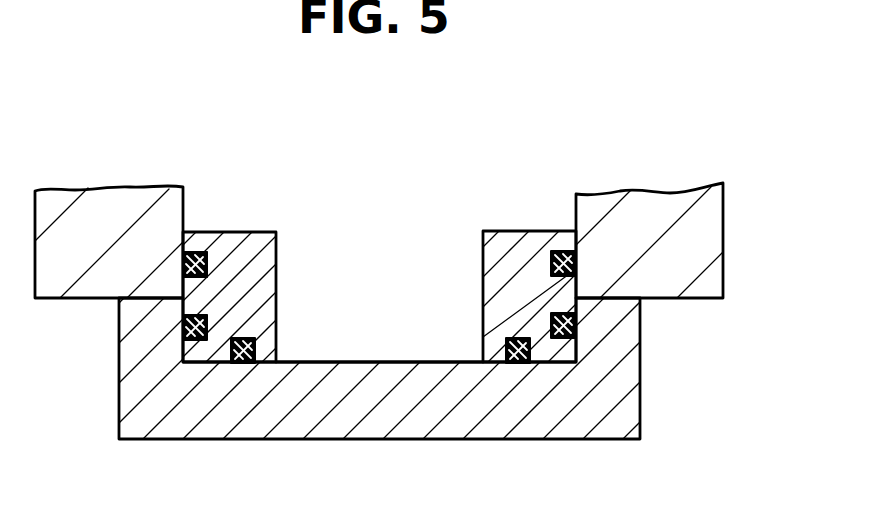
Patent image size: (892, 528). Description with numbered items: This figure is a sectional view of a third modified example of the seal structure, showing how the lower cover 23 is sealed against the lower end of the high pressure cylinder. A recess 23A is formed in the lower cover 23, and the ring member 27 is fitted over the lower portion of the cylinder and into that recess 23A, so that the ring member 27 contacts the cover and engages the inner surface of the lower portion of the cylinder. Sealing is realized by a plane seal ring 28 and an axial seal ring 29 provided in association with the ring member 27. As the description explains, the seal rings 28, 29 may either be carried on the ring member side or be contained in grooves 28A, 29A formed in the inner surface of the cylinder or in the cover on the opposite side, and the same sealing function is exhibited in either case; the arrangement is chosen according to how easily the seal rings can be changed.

The lower cover 23 is at (562, 417).
The recess 23A is at (400, 361).
The ring member 27 is at (510, 243).
The plane seal ring 28 is at (255, 347).
The groove 28A is at (234, 350).
The axial seal ring 29 is at (201, 250).
The groove 29A is at (208, 322).